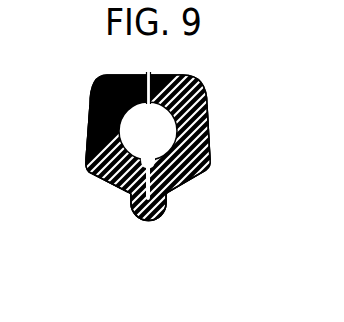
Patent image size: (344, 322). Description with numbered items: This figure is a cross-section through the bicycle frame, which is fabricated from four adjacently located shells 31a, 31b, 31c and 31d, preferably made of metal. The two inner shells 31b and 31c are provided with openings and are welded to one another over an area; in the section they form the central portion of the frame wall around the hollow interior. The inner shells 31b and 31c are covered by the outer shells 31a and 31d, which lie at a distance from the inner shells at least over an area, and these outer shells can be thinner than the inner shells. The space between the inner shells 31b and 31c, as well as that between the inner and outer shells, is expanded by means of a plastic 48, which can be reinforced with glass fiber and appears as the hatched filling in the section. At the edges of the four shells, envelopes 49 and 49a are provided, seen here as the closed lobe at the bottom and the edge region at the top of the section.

The plastic 48 is at (208, 106).
The envelope 49 is at (159, 221).
The envelope 49a is at (188, 82).
The outer shell 31a is at (88, 146).
The inner shell 31b is at (116, 183).
The inner shell 31c is at (178, 183).
The outer shell 31d is at (208, 138).